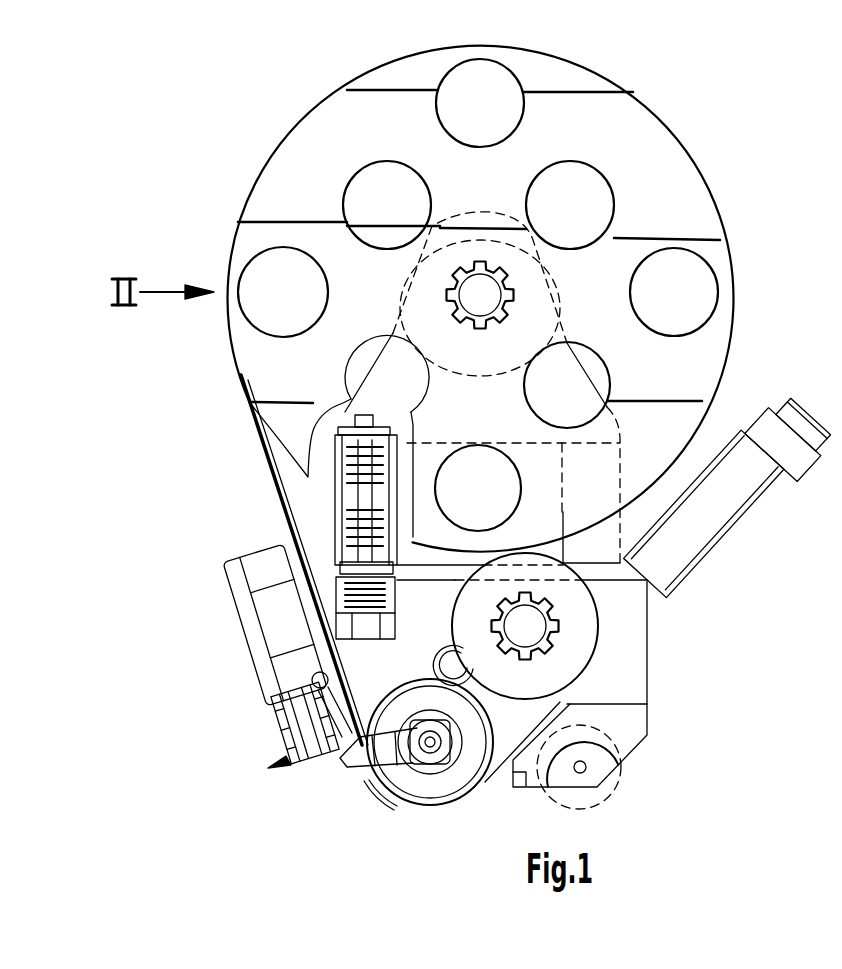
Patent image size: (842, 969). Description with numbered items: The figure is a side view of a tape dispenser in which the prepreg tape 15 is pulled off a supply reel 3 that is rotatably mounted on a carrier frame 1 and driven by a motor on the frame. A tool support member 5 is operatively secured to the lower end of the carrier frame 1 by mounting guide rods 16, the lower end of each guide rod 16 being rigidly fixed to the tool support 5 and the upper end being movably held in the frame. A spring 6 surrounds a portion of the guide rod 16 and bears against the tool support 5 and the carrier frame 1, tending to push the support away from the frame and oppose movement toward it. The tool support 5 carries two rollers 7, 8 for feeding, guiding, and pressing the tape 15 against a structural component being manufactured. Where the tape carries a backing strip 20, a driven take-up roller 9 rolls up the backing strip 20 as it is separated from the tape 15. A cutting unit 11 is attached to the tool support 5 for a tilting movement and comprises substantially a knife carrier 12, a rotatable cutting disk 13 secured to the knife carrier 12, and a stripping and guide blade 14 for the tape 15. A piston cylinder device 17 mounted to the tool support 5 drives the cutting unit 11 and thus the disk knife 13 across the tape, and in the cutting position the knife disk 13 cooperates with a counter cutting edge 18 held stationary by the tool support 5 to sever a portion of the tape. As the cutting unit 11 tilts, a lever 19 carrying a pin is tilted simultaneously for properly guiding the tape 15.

The carrier frame 1 is at (600, 553).
The supply reel 3 is at (655, 128).
The tool support member 5 is at (640, 660).
The spring 6 is at (394, 603).
The roller 7 is at (447, 806).
The roller 8 is at (605, 800).
The take-up roller 9 is at (597, 632).
The cutting unit 11 is at (242, 681).
The knife carrier 12 is at (253, 672).
The rotatable cutting disk 13 is at (283, 770).
The stripping and guide blade 14 is at (378, 810).
The prepreg tape 15 is at (275, 478).
The mounting guide rod 16 is at (360, 502).
The piston cylinder device 17 is at (713, 517).
The counter cutting edge 18 is at (514, 790).
The lever 19 is at (342, 760).
The backing strip 20 is at (528, 726).